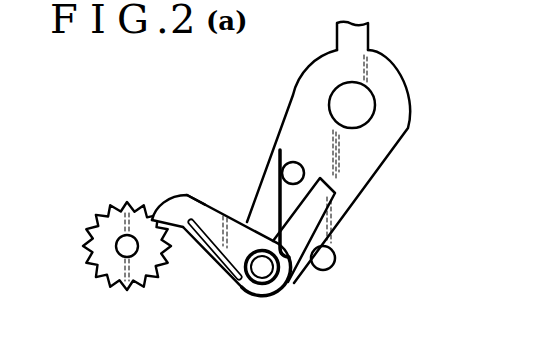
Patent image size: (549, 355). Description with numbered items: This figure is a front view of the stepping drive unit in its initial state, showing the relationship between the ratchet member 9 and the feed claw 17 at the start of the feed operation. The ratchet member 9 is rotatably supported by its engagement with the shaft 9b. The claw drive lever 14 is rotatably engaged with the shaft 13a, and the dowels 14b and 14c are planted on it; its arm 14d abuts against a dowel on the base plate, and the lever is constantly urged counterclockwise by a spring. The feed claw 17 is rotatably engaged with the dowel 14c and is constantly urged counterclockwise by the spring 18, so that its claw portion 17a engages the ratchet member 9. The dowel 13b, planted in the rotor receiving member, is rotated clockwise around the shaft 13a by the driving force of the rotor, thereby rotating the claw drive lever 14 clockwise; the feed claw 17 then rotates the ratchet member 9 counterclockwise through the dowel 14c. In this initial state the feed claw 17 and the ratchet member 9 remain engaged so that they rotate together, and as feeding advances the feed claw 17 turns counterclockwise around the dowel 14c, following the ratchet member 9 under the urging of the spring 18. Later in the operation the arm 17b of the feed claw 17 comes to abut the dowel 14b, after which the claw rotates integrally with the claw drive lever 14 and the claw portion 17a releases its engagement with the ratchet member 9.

The ratchet member 9 is at (123, 217).
The shaft 9b is at (123, 250).
The shaft 13a is at (334, 93).
The dowel 13b is at (335, 258).
The claw drive lever 14 is at (312, 102).
The dowel 14b is at (293, 160).
The dowel 14c is at (293, 283).
The arm 14d is at (360, 38).
The feed claw 17 is at (236, 283).
The claw portion 17a is at (193, 208).
The arm 17b is at (322, 197).
The spring 18 is at (227, 265).